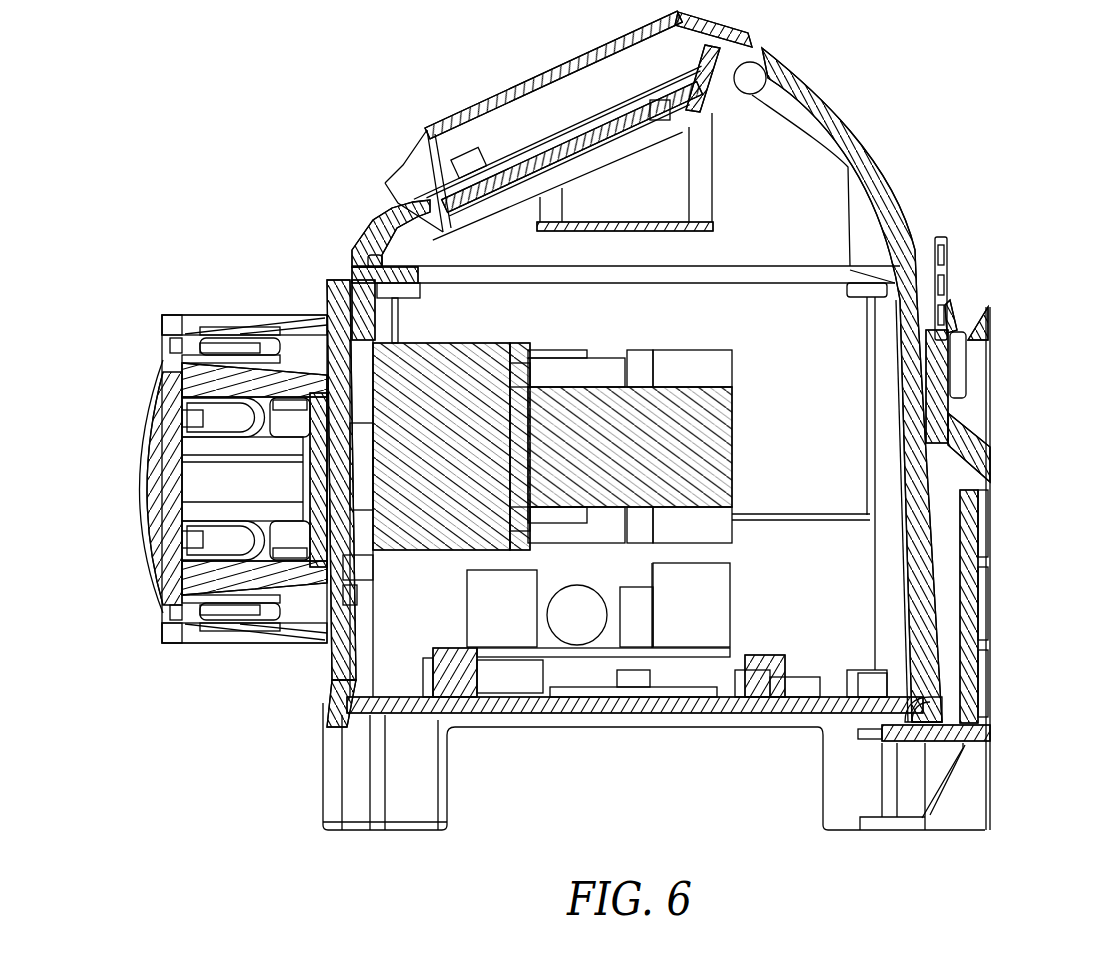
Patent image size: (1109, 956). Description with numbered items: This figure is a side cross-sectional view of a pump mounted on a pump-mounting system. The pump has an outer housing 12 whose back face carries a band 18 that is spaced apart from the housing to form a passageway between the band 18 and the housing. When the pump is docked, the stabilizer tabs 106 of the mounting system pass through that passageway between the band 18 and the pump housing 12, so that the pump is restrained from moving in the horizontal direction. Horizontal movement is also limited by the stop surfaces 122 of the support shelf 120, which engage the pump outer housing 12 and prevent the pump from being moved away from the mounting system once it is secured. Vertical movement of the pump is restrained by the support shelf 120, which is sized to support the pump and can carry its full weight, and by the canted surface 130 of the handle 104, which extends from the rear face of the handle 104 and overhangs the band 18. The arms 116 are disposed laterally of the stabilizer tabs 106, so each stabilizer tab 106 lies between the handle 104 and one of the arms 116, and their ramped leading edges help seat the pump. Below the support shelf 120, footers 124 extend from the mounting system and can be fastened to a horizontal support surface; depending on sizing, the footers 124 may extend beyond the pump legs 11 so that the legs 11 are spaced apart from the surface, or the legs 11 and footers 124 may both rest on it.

The legs 11 is at (843, 787).
The outer housing 12 is at (843, 130).
The band 18 is at (955, 373).
The handle 104 is at (937, 240).
The stabilizer tabs 106 is at (938, 407).
The arms 116 is at (977, 340).
The support shelf 120 is at (970, 740).
The stop surfaces 122 is at (923, 717).
The footers 124 is at (970, 808).
The canted surface 130 is at (957, 297).